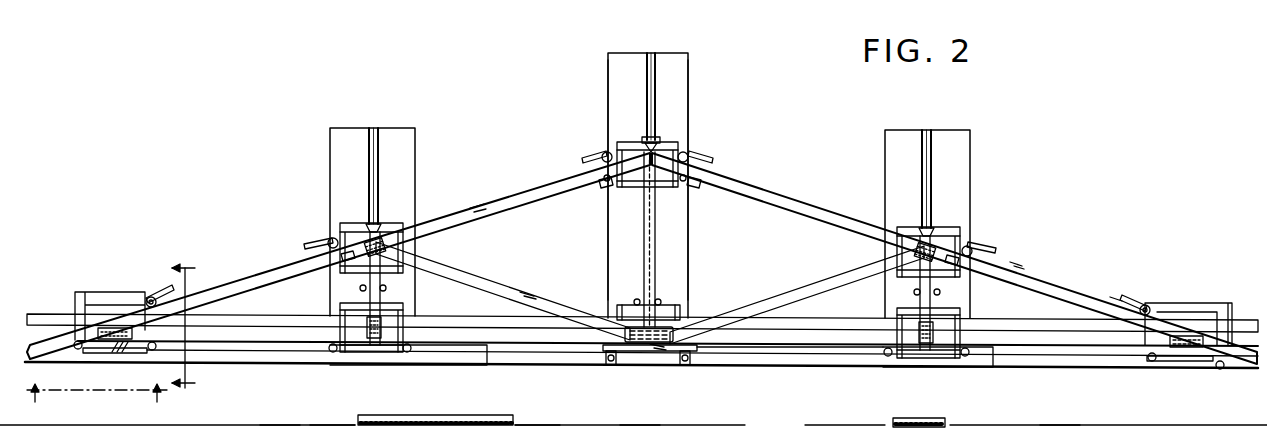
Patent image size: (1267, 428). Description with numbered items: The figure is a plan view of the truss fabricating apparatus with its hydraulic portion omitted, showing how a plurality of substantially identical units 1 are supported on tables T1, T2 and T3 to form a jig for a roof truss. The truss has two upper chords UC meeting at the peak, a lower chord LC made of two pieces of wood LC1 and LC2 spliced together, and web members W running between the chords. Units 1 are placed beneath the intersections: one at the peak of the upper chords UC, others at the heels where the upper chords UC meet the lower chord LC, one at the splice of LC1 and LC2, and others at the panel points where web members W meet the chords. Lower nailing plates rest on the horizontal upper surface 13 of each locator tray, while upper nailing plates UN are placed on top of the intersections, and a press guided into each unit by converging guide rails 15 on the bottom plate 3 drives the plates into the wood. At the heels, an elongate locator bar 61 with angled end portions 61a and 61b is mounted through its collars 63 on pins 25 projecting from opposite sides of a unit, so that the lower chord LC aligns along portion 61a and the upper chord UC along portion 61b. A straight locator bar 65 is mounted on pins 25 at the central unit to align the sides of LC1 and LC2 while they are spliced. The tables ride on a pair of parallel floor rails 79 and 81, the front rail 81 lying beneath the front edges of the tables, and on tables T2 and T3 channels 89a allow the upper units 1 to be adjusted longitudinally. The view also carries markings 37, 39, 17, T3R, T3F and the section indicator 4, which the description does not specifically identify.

The unit 1 is at (663, 128).
The upper surface of locator tray 13 is at (355, 232).
The guide rails 15 is at (647, 140).
The pins 25 is at (149, 294).
The clamp rod 37 is at (588, 149).
The elongate locator bar 61 is at (102, 350).
The end portion of bar 61a is at (535, 422).
The end portion of bar 61b is at (332, 414).
The sleeves or collars 63 is at (256, 422).
The locator bar 65 is at (693, 350).
The rear rail 79 is at (283, 300).
The front rail 81 is at (256, 362).
The channels 89a is at (374, 128).
The support 39 is at (606, 427).
The base 17 is at (300, 426).
The table T1 is at (124, 276).
The table T2 is at (333, 175).
The table T3 is at (607, 83).
The center tower rear T3R is at (692, 78).
The center tower front T3F is at (607, 295).
The upper chords UC is at (475, 208).
The upper nailing plates UN is at (378, 240).
The web members W is at (447, 272).
The lower chord LC is at (810, 347).
The lower chord piece LC1 is at (485, 348).
The lower chord piece LC2 is at (993, 350).
The bottom plate 3 is at (97, 406).
The section line 4 is at (192, 327).